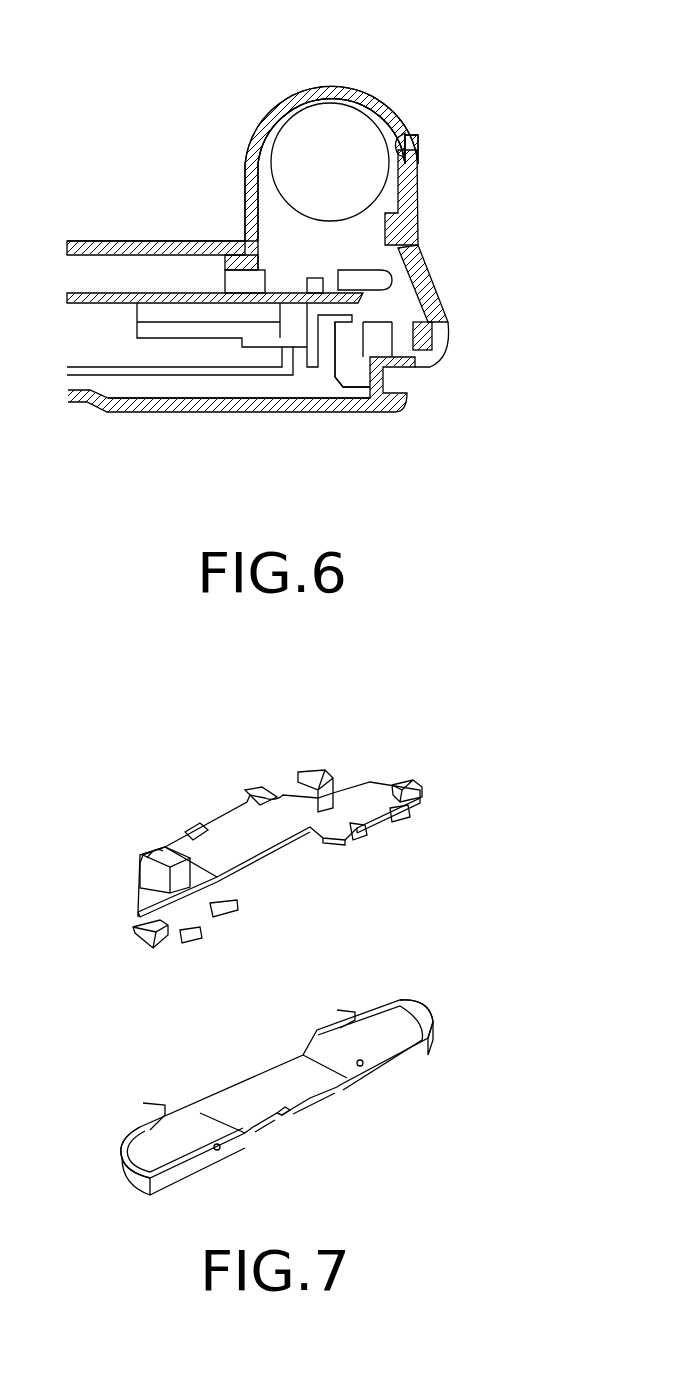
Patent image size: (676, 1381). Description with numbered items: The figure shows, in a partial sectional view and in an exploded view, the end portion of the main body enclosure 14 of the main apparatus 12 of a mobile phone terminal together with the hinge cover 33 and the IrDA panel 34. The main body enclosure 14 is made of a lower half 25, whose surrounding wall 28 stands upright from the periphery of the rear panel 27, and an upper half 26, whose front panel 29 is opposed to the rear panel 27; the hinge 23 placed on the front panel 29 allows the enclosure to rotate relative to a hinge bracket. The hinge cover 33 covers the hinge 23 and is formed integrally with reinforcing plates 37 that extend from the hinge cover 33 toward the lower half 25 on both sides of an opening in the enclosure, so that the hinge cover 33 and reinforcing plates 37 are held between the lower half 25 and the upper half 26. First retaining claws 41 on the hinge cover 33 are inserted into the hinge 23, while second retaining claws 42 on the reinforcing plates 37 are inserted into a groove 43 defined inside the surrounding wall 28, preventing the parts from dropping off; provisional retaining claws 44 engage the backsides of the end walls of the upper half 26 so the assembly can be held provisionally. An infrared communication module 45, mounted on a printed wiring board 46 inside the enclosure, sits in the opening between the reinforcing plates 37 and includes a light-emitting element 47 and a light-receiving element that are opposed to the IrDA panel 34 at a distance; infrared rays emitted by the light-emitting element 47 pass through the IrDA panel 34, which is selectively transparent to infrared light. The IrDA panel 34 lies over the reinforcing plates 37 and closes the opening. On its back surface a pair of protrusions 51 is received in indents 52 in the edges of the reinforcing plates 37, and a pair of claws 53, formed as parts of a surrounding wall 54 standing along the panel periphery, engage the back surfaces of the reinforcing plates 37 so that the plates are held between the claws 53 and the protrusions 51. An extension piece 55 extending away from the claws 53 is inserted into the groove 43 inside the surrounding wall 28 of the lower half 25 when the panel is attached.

In FIG. 6, the main apparatus 12 is at (463, 143).
In FIG. 6, the main body enclosure 14 is at (362, 82).
In FIG. 6, the hinge 23 is at (277, 135).
In FIG. 6, the lower half 25 is at (187, 240).
In FIG. 6, the upper half 26 is at (248, 413).
In FIG. 6, the rear panel 27 is at (155, 413).
In FIG. 6, the surrounding wall 28 is at (448, 337).
In FIG. 6, the front panel 29 is at (130, 240).
In FIG. 6, the hinge cover 33 is at (417, 200).
In FIG. 7, the hinge cover 33 is at (233, 830).
In FIG. 6, the IrDA panel 34 is at (437, 295).
In FIG. 7, the IrDA panel 34 is at (267, 1085).
In FIG. 7, the reinforcing plates 37 is at (355, 793).
In FIG. 6, the first retaining claws 41 is at (397, 137).
In FIG. 7, the first retaining claws 41 is at (157, 853).
In FIG. 7, the second retaining claws 42 is at (367, 828).
In FIG. 6, the groove 43 is at (425, 320).
In FIG. 7, the provisional retaining claws 44 is at (405, 790).
In FIG. 6, the infrared communication module 45 is at (343, 272).
In FIG. 6, the printed wiring board 46 is at (93, 303).
In FIG. 6, the light-emitting element 47 is at (392, 280).
In FIG. 7, the protrusions 51 is at (367, 1067).
In FIG. 7, the indents 52 is at (367, 830).
In FIG. 7, the claws 53 is at (353, 1012).
In FIG. 7, the surrounding wall 54 is at (377, 998).
In FIG. 6, the extension piece 55 is at (428, 350).
In FIG. 7, the extension piece 55 is at (292, 1117).